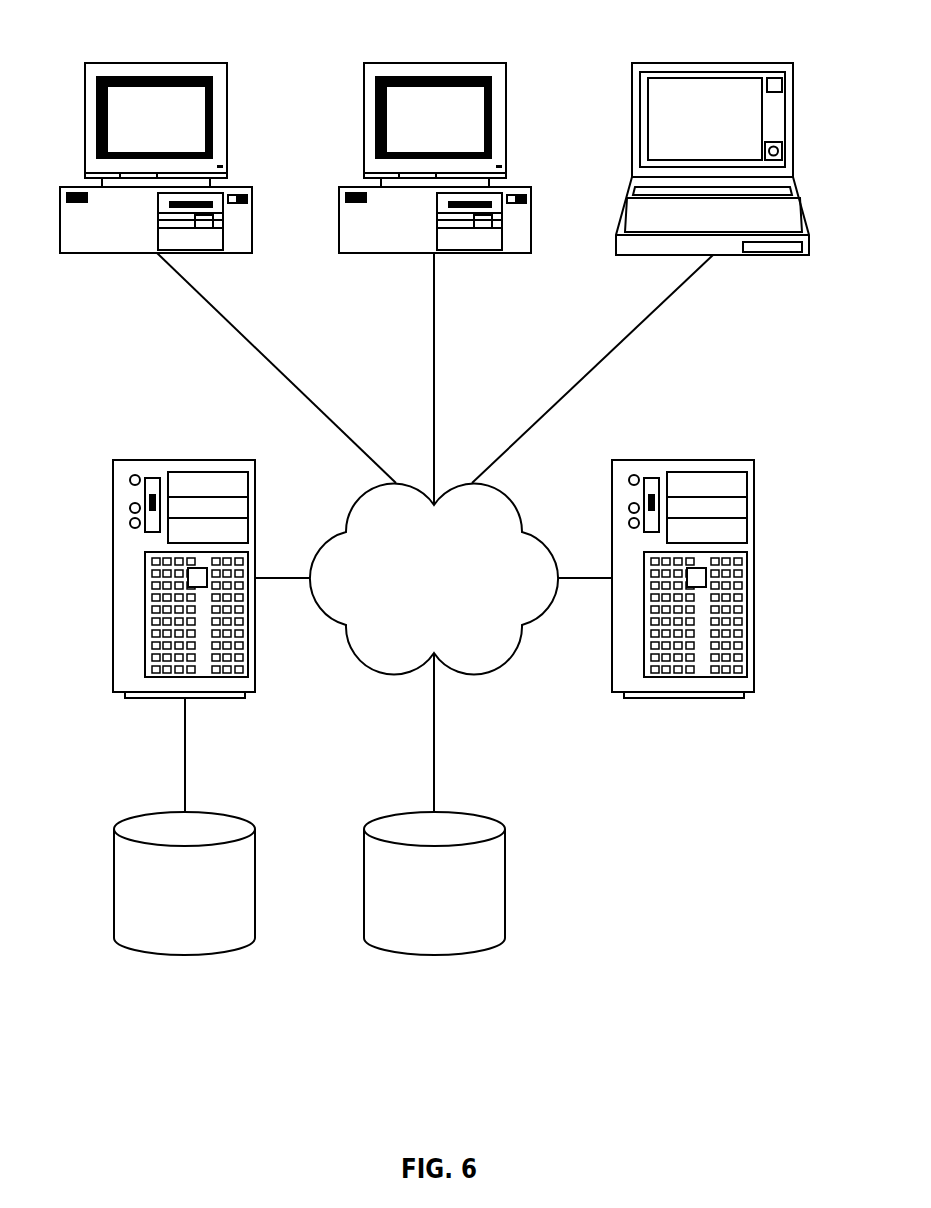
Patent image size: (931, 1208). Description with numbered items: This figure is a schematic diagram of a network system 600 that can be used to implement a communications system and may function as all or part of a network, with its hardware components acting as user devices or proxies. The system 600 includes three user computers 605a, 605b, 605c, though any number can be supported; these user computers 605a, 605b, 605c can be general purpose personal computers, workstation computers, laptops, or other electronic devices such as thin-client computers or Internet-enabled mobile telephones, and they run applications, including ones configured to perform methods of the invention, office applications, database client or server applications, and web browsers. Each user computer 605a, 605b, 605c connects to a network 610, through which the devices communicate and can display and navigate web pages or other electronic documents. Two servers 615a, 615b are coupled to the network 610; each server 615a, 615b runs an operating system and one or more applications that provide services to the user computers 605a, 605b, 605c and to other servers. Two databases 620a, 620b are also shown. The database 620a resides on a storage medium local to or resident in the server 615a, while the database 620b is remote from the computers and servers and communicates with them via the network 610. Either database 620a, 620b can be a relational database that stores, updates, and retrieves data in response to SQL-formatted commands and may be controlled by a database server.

The network system 600 is at (434, 531).
The user computer 605a is at (252, 212).
The user computer 605b is at (339, 206).
The user computer 605c is at (632, 160).
The network 610 is at (468, 675).
The server 615a is at (113, 578).
The server 615b is at (757, 580).
The database 620a is at (185, 955).
The database 620b is at (435, 955).